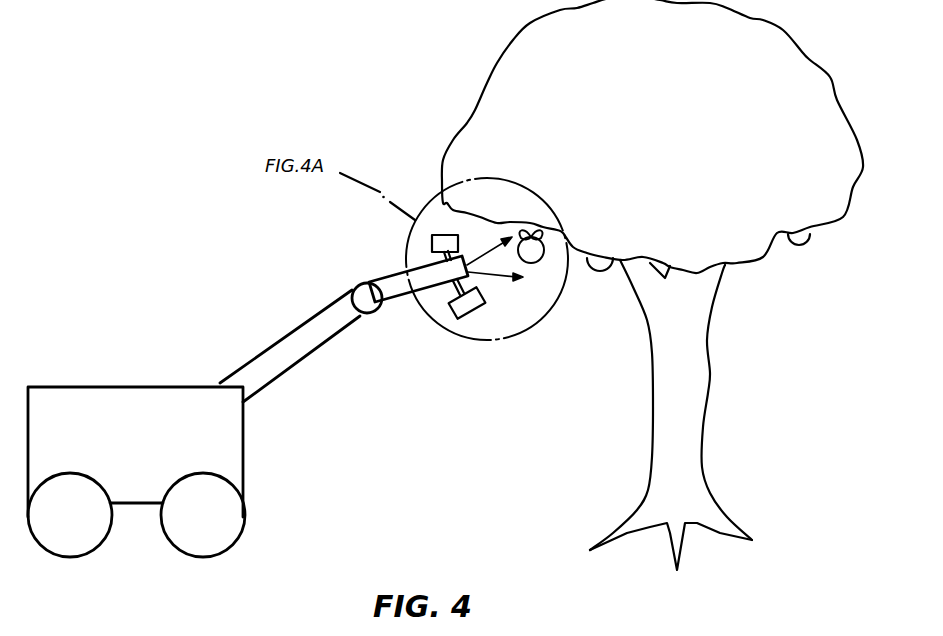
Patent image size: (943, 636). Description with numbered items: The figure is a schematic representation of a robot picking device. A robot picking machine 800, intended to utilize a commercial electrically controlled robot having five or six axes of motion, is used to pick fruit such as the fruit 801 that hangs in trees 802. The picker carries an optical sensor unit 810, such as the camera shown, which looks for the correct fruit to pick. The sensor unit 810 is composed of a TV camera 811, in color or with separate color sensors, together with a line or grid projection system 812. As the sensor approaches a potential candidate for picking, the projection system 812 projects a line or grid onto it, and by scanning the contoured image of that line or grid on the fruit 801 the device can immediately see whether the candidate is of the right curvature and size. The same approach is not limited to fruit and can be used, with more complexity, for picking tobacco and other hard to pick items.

The robot picking machine 800 is at (157, 455).
The optical sensor unit 810 is at (390, 278).
The TV camera 811 is at (473, 313).
The line or grid projection system 812 is at (443, 235).
The fruit 801 is at (538, 258).
The trees 802 is at (698, 395).